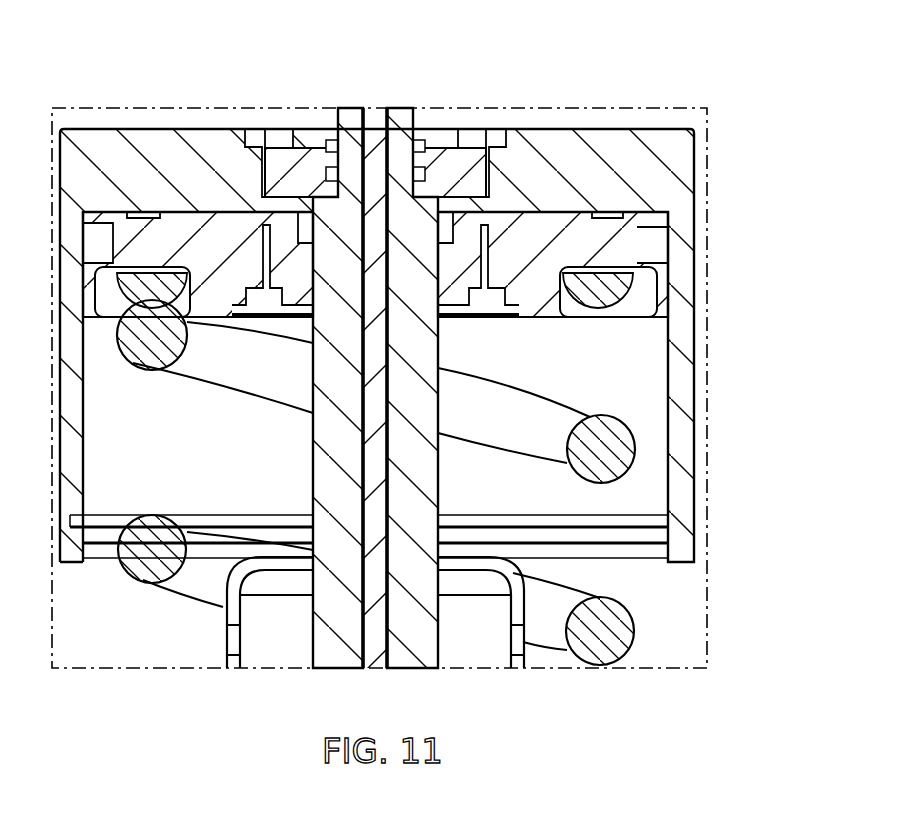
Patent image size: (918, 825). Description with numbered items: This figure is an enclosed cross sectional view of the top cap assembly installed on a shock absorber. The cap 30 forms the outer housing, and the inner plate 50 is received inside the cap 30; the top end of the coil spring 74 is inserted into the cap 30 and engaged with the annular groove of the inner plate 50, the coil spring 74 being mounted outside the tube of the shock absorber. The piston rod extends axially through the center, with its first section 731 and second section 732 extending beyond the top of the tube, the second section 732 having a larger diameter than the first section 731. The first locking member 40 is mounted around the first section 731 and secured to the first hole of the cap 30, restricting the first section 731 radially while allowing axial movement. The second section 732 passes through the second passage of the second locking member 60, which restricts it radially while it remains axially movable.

The cap 30 is at (678, 350).
The first locking member 40 is at (455, 167).
The inner plate 50 is at (608, 243).
The second locking member 60 is at (268, 248).
The coil spring 74 is at (603, 443).
The first section 731 is at (397, 137).
The second section 732 is at (330, 473).